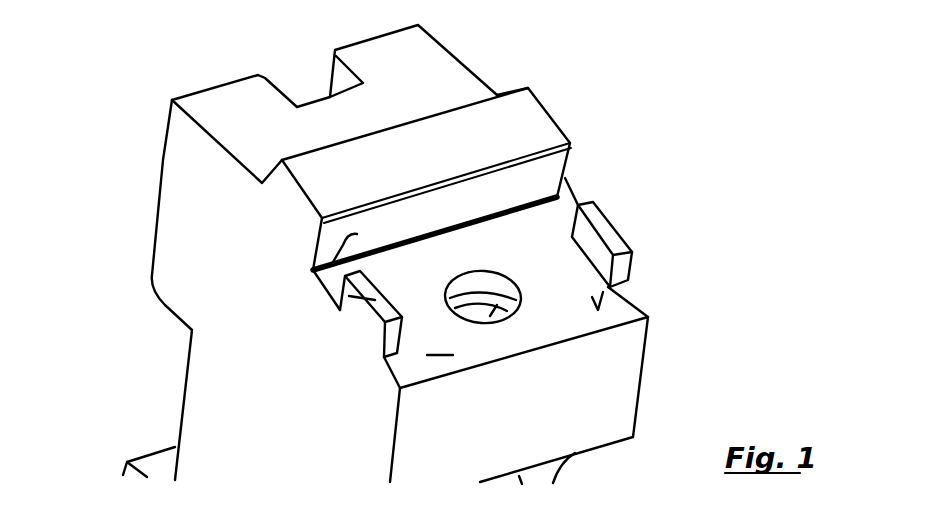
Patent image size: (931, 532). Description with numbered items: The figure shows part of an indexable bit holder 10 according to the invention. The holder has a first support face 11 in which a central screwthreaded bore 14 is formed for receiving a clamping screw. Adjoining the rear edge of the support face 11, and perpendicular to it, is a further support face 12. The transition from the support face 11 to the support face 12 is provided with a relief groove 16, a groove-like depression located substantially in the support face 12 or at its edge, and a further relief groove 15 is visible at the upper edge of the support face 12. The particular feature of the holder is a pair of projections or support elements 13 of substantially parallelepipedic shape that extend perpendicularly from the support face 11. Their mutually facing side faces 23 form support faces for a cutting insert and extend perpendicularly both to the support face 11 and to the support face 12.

The indexable bit holder 10 is at (623, 87).
The first support face 11 is at (630, 273).
The further support face 12 is at (313, 270).
The support elements 13 is at (337, 310).
The screwthreaded bore 14 is at (488, 314).
The relief groove 15 is at (573, 157).
The relief groove 16 is at (540, 193).
The side faces 23 is at (605, 255).